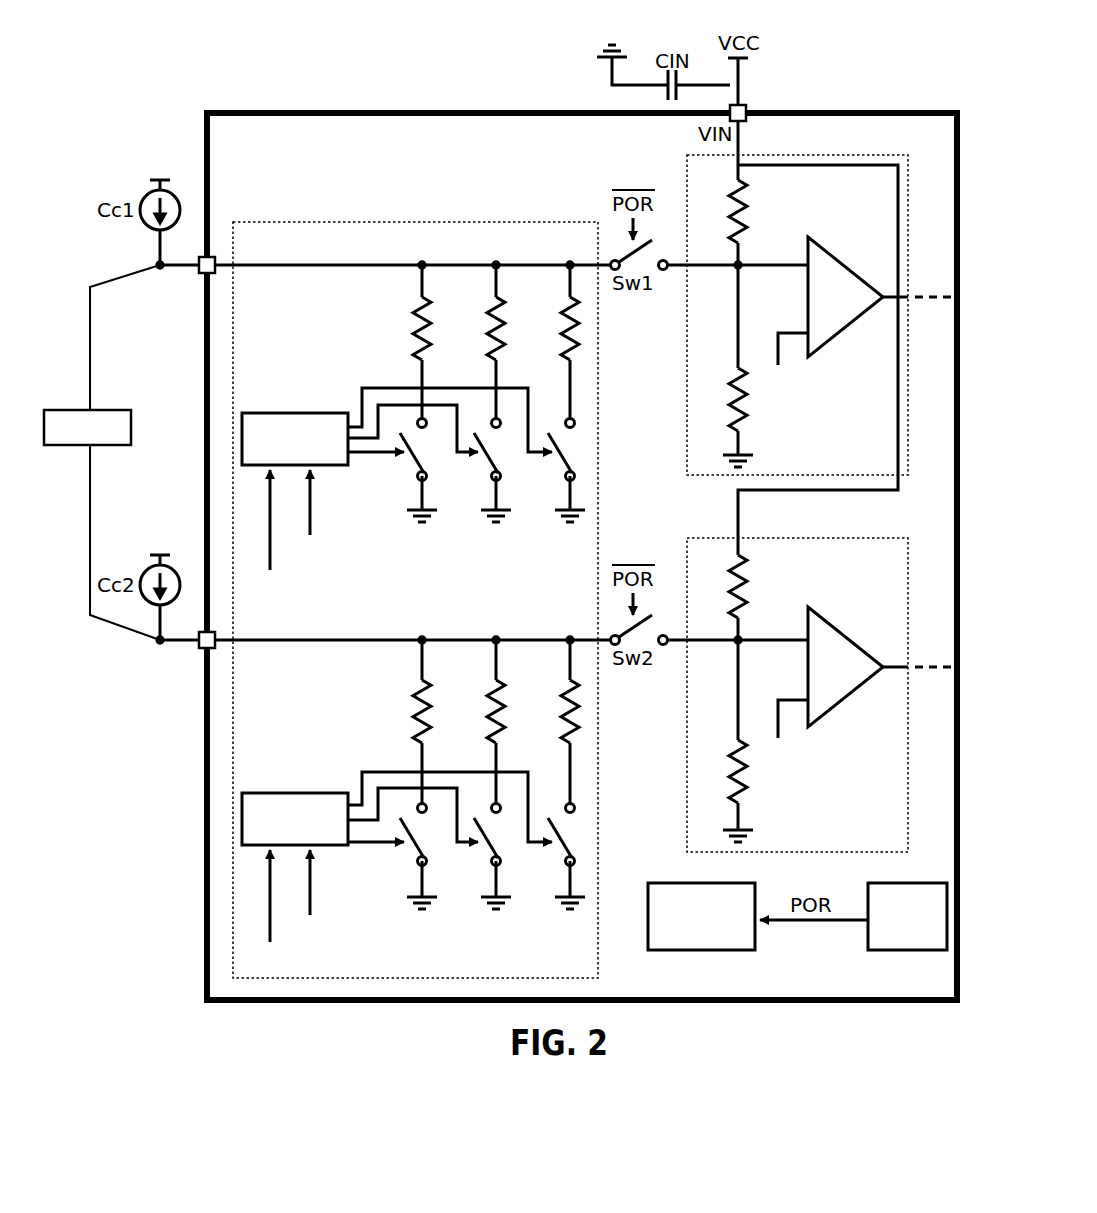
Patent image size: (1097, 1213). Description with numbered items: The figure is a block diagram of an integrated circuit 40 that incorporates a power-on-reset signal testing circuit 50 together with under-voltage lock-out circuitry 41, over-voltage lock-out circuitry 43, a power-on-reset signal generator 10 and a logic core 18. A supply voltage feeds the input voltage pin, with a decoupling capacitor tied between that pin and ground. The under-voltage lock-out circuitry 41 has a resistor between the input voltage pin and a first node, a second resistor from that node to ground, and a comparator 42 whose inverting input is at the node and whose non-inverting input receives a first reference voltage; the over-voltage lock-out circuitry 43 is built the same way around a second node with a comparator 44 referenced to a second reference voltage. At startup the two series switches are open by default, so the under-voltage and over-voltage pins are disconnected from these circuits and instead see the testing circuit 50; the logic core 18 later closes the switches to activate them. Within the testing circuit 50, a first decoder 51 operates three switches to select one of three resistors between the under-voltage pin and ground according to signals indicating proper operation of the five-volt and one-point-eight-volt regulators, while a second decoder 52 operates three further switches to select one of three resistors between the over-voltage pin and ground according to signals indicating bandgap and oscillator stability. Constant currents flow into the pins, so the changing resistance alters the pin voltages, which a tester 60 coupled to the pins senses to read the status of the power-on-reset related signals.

The integrated circuit 40 is at (838, 87).
The Under-Voltage Lock-Out circuitry 41 is at (822, 155).
The comparator 42 is at (828, 252).
The Over-Voltage Lock-Out circuitry 43 is at (822, 538).
The comparator 44 is at (828, 623).
The POR signal testing circuit 50 is at (348, 222).
The decoder 51 is at (268, 413).
The decoder 52 is at (268, 793).
The tester 60 is at (97, 409).
The logic core 18 is at (648, 901).
The POR reset signal generator 10 is at (868, 928).